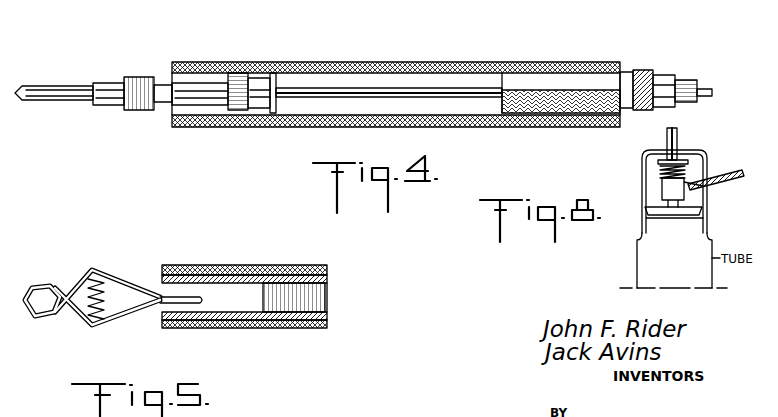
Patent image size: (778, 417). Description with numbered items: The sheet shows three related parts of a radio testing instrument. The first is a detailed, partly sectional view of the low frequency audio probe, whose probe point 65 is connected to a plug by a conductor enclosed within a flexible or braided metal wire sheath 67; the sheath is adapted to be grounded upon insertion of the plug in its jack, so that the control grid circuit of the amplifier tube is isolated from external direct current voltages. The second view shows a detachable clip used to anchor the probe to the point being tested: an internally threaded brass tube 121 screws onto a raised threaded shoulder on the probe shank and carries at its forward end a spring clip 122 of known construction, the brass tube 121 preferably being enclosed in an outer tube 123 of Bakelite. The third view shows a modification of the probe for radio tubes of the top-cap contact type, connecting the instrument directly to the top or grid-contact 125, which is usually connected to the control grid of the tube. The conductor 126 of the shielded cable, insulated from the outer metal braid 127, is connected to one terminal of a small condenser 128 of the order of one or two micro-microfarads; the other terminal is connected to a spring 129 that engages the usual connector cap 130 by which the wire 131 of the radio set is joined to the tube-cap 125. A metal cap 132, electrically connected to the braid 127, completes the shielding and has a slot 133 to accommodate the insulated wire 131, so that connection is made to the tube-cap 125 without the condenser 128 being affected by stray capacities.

In FIG. 4, the probe point 65 is at (40, 99).
In FIG. 4, the flexible or braided metal wire sheath 67 is at (330, 90).
In FIG. 5, the internally threaded brass tube 121 is at (313, 290).
In FIG. 5, the spring clip 122 is at (40, 286).
In FIG. 5, the outer tube 123 is at (218, 265).
In FIG. 8, the top or grid-contact 125 is at (680, 201).
In FIG. 8, the conductor 126 is at (678, 130).
In FIG. 8, the outer metal braid 127 is at (678, 140).
In FIG. 8, the small condenser 128 is at (665, 163).
In FIG. 8, the spring 129 is at (663, 176).
In FIG. 8, the connector cap 130 is at (664, 190).
In FIG. 8, the wire 131 is at (700, 182).
In FIG. 8, the metal cap 132 is at (645, 222).
In FIG. 8, the slot 133 is at (704, 192).